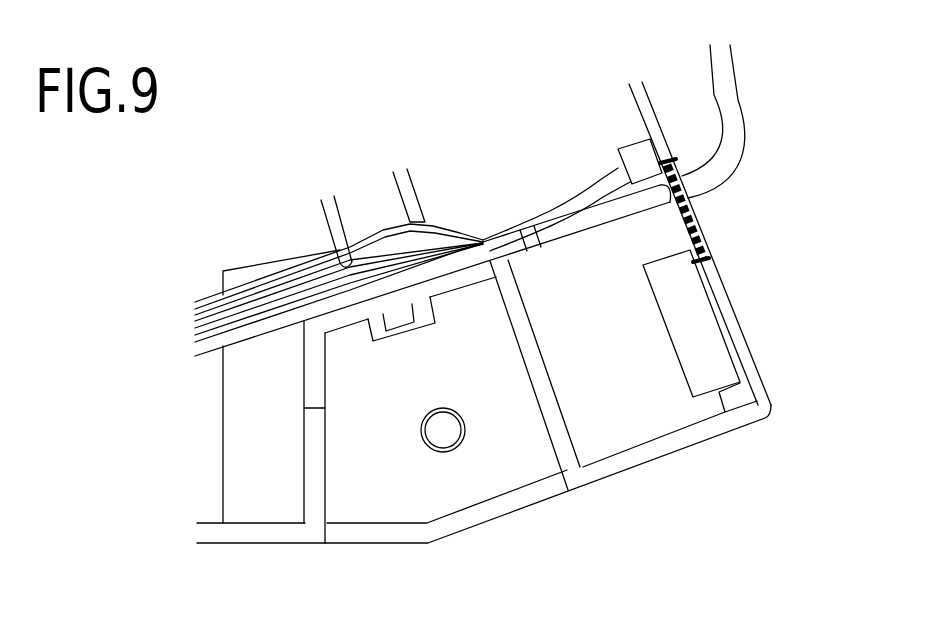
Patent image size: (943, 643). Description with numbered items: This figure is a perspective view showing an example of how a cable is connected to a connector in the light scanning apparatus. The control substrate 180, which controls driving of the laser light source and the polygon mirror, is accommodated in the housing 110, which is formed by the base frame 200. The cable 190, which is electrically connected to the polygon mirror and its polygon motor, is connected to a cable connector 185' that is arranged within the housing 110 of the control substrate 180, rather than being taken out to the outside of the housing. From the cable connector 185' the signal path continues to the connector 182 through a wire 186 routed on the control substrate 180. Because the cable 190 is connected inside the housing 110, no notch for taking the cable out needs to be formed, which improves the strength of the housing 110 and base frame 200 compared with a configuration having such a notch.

The control substrate 180 is at (648, 117).
The connector 182 is at (697, 335).
The cable connector 185' is at (596, 129).
The wire 186 is at (703, 223).
The cable 190 is at (447, 226).
The base frame 200 is at (500, 518).
The housing 110 is at (483, 384).